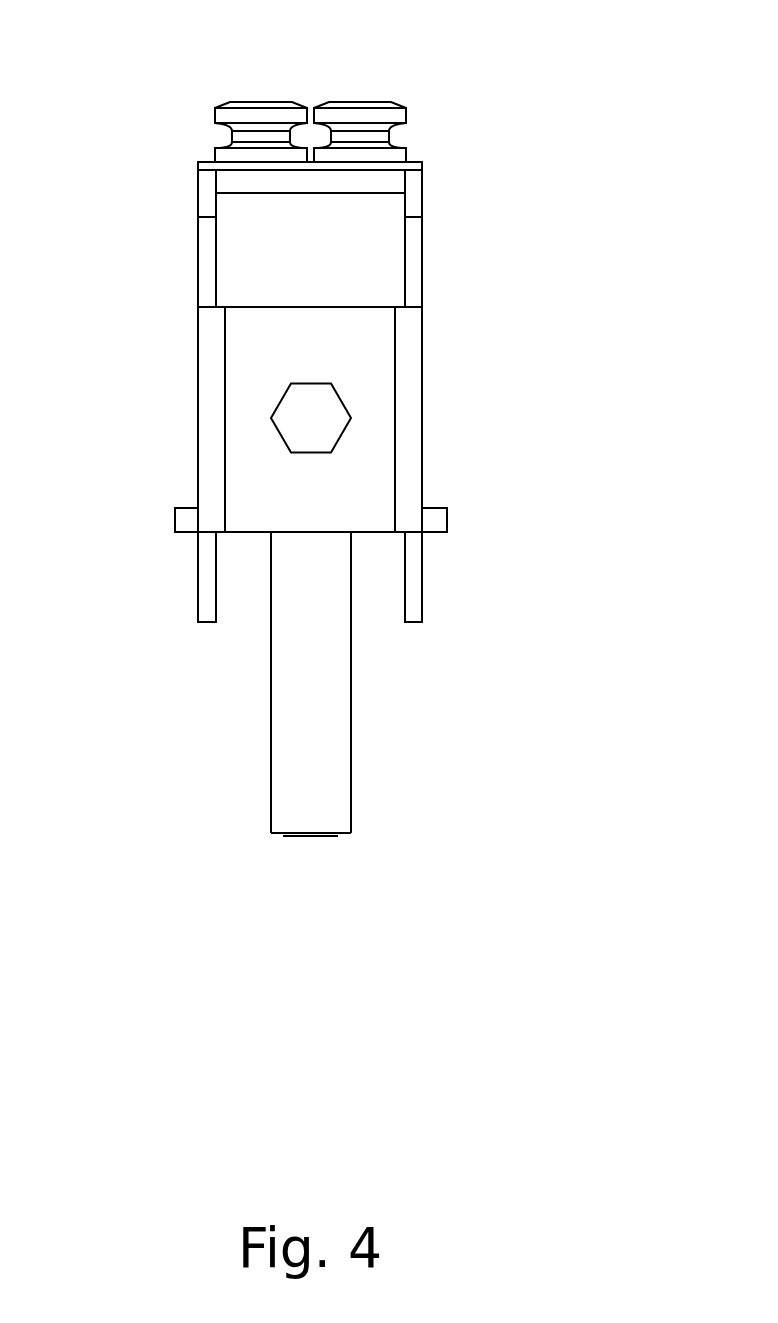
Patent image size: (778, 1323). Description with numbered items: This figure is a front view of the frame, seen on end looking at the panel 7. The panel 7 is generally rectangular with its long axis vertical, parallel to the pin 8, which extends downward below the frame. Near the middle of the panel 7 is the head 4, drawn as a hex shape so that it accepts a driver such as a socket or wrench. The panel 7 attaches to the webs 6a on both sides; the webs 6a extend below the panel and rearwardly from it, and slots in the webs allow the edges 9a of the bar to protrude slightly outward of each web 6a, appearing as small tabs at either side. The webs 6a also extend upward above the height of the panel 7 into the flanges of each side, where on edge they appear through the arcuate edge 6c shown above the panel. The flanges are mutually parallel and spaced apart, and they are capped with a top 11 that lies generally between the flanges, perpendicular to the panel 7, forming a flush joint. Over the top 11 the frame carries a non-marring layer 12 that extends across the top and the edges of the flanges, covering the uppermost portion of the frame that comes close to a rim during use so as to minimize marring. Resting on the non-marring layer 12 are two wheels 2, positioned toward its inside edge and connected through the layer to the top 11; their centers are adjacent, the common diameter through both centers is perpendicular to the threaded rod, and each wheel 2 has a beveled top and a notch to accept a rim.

The terminal 2 is at (262, 103).
The non-marring layer 12 is at (423, 162).
The top 11 is at (385, 182).
The arcuate edge 6c is at (208, 260).
The panel 7 is at (370, 363).
The head 4 is at (282, 400).
The edges of the bar 9a is at (175, 520).
The webs 6a is at (199, 622).
The pin 8 is at (327, 744).